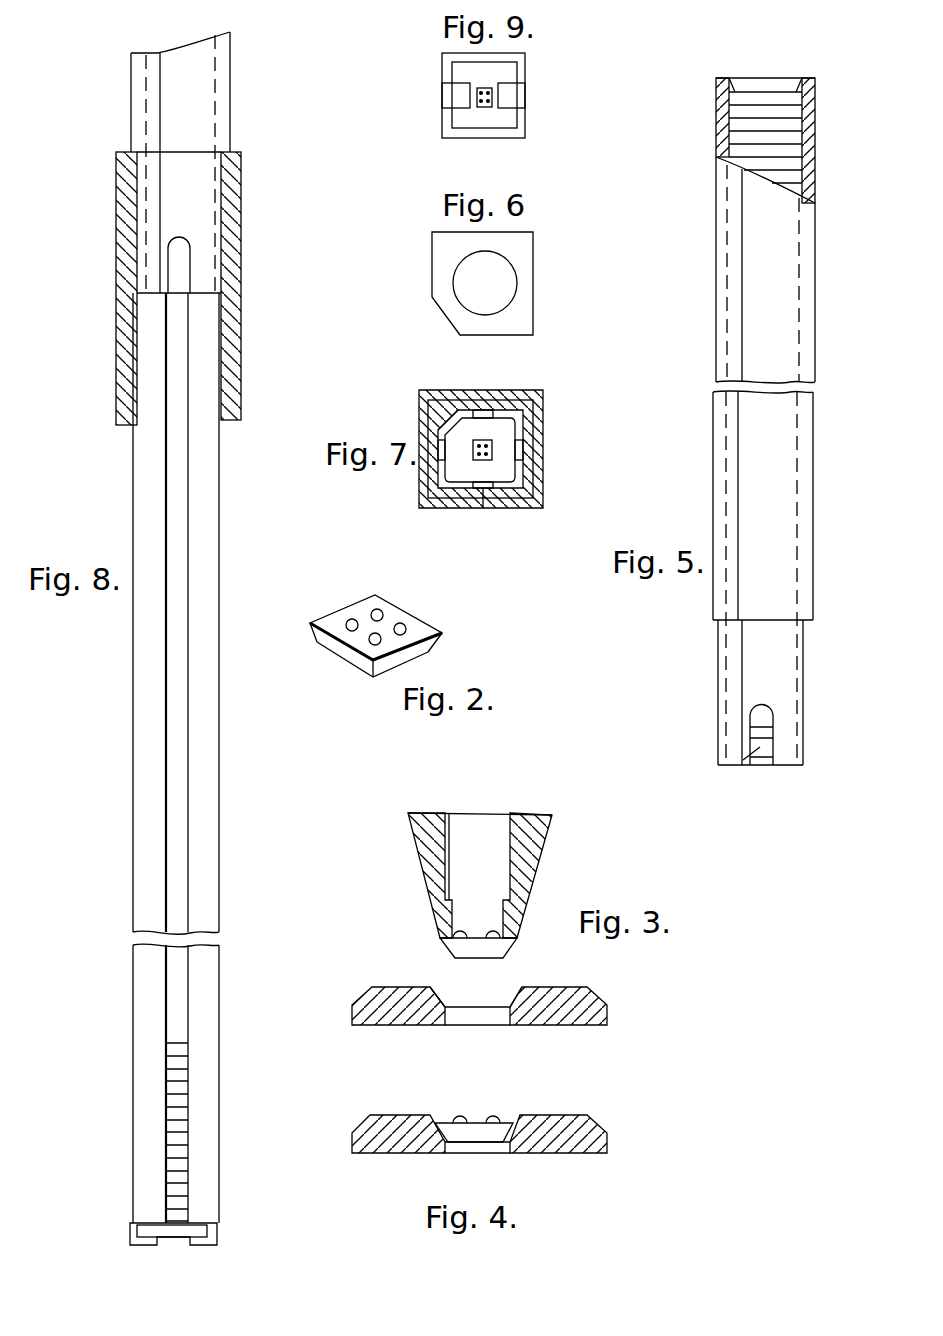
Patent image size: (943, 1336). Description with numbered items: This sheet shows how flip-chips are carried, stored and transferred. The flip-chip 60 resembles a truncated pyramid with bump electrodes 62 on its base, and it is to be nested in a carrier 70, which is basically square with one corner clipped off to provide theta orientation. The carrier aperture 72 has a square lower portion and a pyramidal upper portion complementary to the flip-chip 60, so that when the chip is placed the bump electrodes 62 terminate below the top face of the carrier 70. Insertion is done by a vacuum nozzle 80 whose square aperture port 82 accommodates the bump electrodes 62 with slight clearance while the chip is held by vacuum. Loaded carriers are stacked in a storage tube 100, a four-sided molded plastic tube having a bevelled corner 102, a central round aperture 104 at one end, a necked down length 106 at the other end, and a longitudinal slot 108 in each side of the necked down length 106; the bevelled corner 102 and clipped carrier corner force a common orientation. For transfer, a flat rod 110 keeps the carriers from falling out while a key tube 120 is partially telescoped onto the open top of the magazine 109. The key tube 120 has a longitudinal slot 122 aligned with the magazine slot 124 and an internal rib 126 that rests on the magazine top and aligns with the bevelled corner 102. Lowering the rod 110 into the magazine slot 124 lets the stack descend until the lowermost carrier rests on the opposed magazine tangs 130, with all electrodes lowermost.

In FIG. 9, the flip-chip 60 is at (483, 108).
In FIG. 2, the flip-chip 60 is at (361, 665).
In FIG. 3, the flip-chip 60 is at (458, 948).
In FIG. 4, the flip-chip 60 is at (468, 1130).
In FIG. 9, the bump electrodes 62 is at (489, 92).
In FIG. 2, the bump electrodes 62 is at (381, 637).
In FIG. 3, the bump electrodes 62 is at (452, 931).
In FIG. 4, the bump electrodes 62 is at (458, 1118).
In FIG. 8, the carrier 70 is at (180, 1187).
In FIG. 9, the carrier 70 is at (505, 122).
In FIG. 3, the carrier 70 is at (597, 1018).
In FIG. 4, the carrier 70 is at (595, 1133).
In FIG. 3, the carrier aperture 72 is at (500, 995).
In FIG. 3, the vacuum nozzle 80 is at (540, 851).
In FIG. 3, the aperture port 82 is at (477, 915).
In FIG. 8, the storage tube 100 is at (247, 106).
In FIG. 6, the storage tube 100 is at (442, 255).
In FIG. 5, the storage tube 100 is at (833, 331).
In FIG. 8, the bevelled corner 102 is at (146, 108).
In FIG. 5, the bevelled corner 102 is at (726, 315).
In FIG. 6, the central round aperture 104 is at (510, 284).
In FIG. 5, the central round aperture 104 is at (742, 86).
In FIG. 5, the necked down length 106 is at (773, 695).
In FIG. 8, the longitudinal slot 108 is at (190, 251).
In FIG. 7, the longitudinal slot 108 is at (488, 412).
In FIG. 5, the longitudinal slot 108 is at (768, 717).
In FIG. 8, the magazine 109 is at (208, 647).
In FIG. 5, the flat rod 110 is at (743, 760).
In FIG. 8, the key tube 120 is at (230, 238).
In FIG. 7, the key tube 120 is at (540, 422).
In FIG. 7, the longitudinal slot 122 is at (488, 495).
In FIG. 8, the magazine slot 124 is at (182, 547).
In FIG. 7, the internal rib 126 is at (447, 416).
In FIG. 8, the magazine tangs 130 is at (190, 1247).
In FIG. 9, the magazine tangs 130 is at (452, 102).